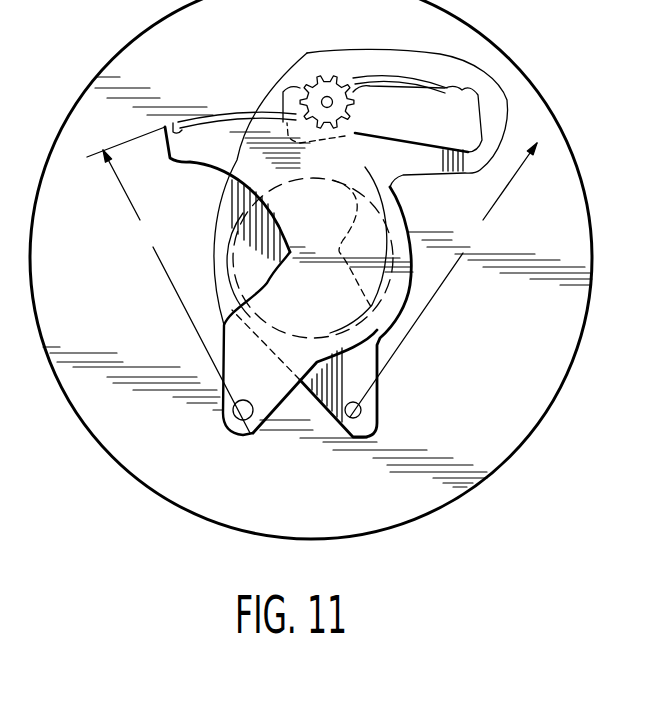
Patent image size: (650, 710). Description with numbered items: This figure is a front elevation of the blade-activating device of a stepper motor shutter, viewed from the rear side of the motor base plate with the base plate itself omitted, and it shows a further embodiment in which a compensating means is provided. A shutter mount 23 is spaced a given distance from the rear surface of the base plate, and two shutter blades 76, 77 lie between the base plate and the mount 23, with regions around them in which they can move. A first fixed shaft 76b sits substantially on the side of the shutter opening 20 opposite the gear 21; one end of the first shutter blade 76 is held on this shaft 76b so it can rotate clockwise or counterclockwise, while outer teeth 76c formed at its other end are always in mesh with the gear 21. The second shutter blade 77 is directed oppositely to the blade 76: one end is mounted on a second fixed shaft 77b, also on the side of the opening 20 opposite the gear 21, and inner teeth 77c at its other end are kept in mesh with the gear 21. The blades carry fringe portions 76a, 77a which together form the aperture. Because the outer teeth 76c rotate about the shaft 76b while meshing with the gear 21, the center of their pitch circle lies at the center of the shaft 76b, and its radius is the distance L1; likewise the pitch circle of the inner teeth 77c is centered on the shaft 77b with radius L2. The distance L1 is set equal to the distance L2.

The shutter opening 20 is at (318, 185).
The gear 21 is at (356, 101).
The shutter mount 23 is at (520, 412).
The first shutter blade 76 is at (197, 147).
The fringe portion 76a is at (270, 226).
The first fixed shaft 76b is at (250, 438).
The outer teeth 76c is at (173, 123).
The second shutter blade 77 is at (324, 52).
The fringe portion 77a is at (405, 203).
The second fixed shaft 77b is at (362, 413).
The inner teeth 77c is at (470, 95).
The distance L1 is at (176, 291).
The distance L2 is at (443, 280).